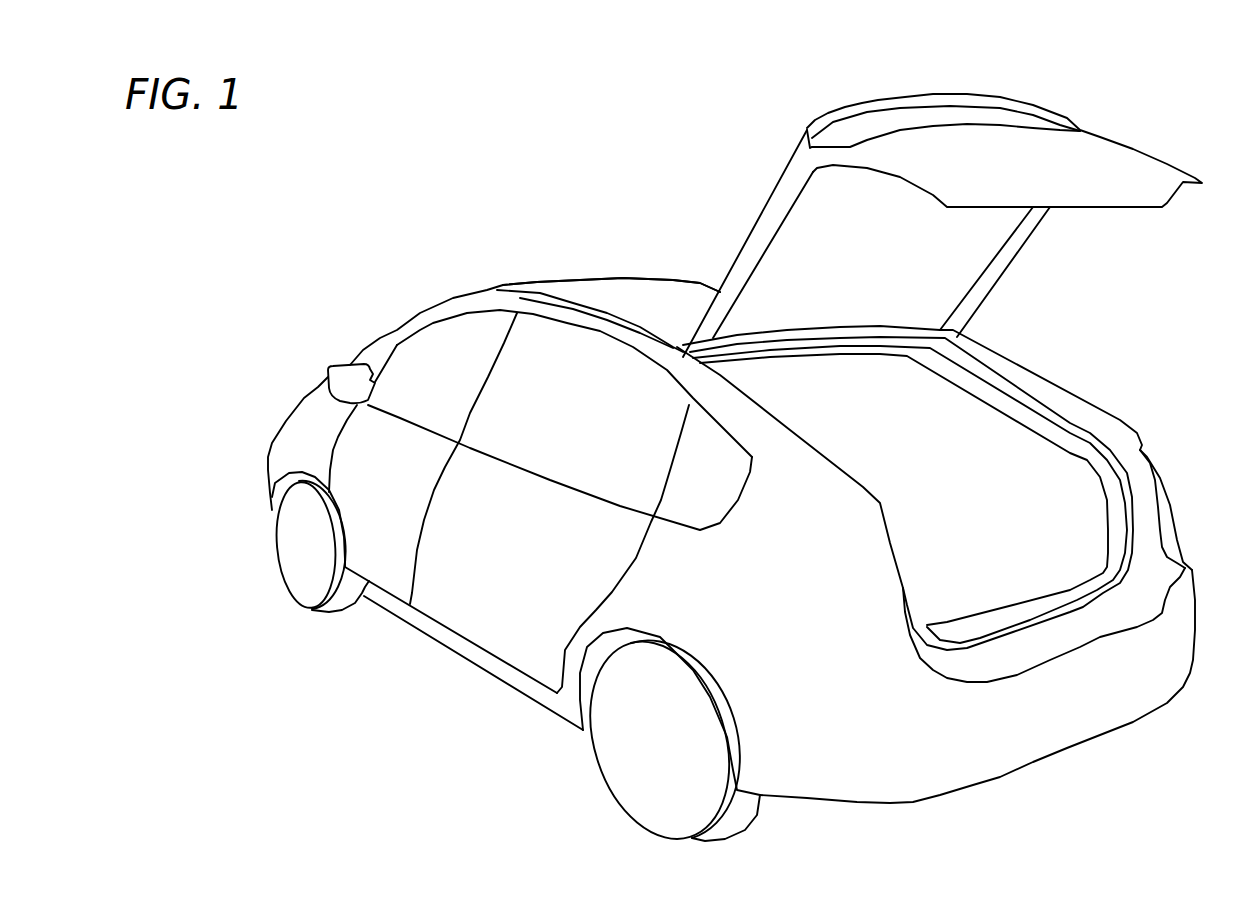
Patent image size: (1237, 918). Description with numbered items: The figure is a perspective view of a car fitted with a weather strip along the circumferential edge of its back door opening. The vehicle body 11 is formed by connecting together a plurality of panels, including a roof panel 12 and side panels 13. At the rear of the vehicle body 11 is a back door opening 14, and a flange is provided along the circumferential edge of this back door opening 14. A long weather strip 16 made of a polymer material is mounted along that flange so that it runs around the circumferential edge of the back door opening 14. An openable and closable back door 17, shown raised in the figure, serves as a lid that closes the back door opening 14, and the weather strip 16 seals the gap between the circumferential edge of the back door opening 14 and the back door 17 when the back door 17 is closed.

The vehicle body 11 is at (553, 280).
The roof panel 12 is at (640, 318).
The side panels 13 is at (600, 332).
The back door opening 14 is at (1020, 450).
The weather strip 16 is at (1070, 615).
The back door 17 is at (776, 190).